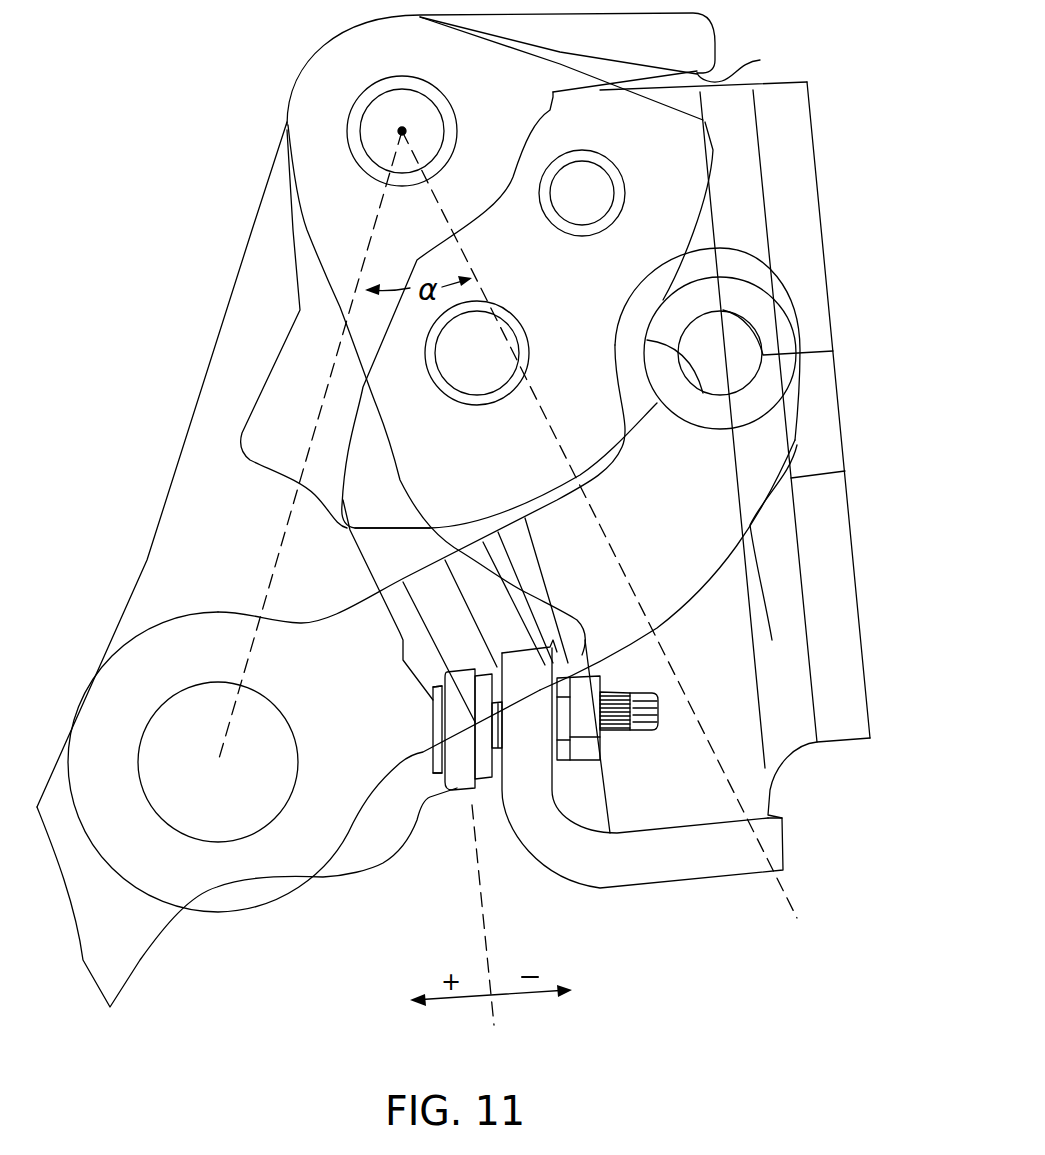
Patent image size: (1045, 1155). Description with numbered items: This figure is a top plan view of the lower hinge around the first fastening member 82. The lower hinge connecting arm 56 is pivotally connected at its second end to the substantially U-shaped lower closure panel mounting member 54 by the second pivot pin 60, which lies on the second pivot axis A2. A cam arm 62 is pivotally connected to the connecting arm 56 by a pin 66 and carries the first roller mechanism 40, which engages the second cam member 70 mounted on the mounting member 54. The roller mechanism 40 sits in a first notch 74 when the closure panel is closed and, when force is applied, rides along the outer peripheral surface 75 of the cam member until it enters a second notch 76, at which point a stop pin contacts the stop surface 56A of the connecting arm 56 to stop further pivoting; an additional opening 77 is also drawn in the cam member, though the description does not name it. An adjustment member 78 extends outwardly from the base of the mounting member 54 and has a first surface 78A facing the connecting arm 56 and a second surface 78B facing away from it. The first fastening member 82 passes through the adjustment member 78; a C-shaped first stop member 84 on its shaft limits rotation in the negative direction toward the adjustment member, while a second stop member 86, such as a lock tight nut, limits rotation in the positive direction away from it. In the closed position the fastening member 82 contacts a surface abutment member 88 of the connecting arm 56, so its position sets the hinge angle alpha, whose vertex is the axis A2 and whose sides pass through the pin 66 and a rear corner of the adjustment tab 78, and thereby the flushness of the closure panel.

The first roller mechanism 40 is at (745, 280).
The lower closure panel mounting member 54 is at (876, 700).
The lower hinge connecting arm 56 is at (196, 379).
The stop surface 56A is at (760, 60).
The second pivot pin 60 is at (443, 117).
The cam arm 62 is at (700, 598).
The pin 66 is at (178, 732).
The second cam member 70 is at (645, 128).
The first notch 74 is at (708, 393).
The outer peripheral surface 75 is at (383, 530).
The second notch 76 is at (265, 473).
The bracket aperture 77 is at (453, 405).
The adjustment member 78 is at (555, 843).
The first surface 78A is at (500, 655).
The second surface 78B is at (587, 637).
The first fastening member 82 is at (437, 757).
The first stop member 84 is at (493, 780).
The second stop member 86 is at (588, 760).
The surface abutment member 88 is at (433, 727).
The second pivot axis A2 is at (402, 131).